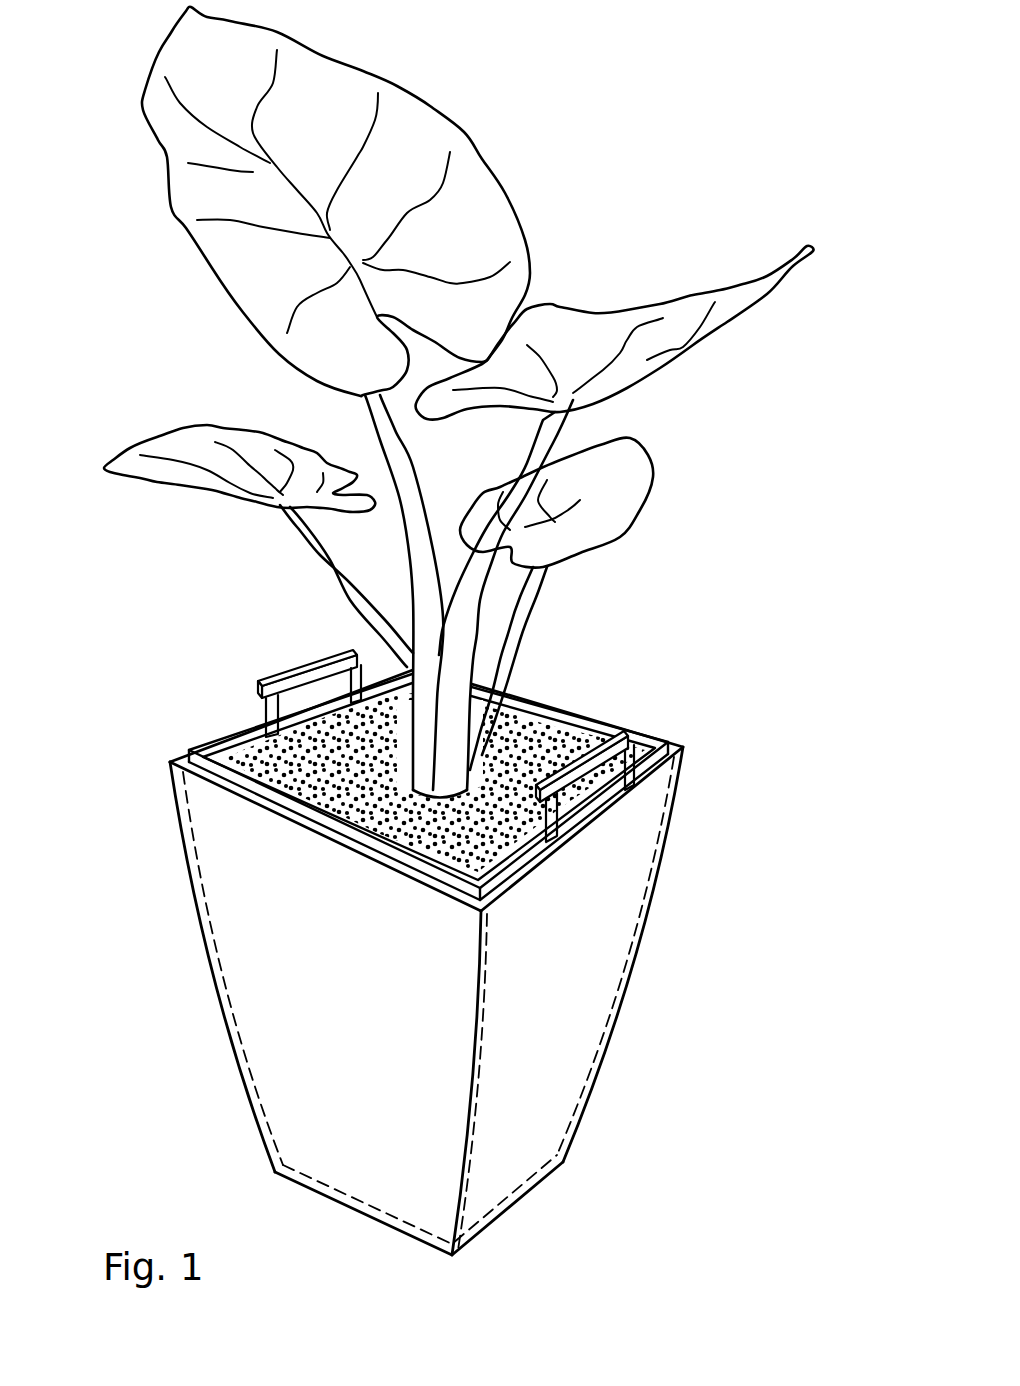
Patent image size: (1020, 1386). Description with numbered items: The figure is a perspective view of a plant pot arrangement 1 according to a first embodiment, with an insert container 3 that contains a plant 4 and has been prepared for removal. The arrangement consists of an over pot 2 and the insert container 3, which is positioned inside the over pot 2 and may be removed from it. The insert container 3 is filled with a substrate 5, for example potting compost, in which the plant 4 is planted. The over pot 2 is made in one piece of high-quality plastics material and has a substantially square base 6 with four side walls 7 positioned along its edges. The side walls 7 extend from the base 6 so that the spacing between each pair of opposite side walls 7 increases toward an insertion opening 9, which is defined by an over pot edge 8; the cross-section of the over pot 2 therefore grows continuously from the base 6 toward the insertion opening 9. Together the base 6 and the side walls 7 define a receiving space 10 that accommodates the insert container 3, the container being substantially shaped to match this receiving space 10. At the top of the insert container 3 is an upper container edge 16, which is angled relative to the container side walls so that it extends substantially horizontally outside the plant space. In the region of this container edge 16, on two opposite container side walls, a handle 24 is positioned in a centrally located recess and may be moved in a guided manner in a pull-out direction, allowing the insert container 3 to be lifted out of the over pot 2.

The plant pot arrangement 1 is at (459, 911).
The over pot 2 is at (450, 961).
The insert container 3 is at (502, 746).
The plant 4 is at (633, 487).
The substrate 5 is at (545, 730).
The base 6 is at (510, 1212).
The side walls 7 is at (607, 980).
The over pot edge 8 is at (683, 747).
The insertion opening 9 is at (195, 757).
The receiving space 10 is at (238, 1048).
The upper container edge 16 is at (650, 758).
The handle 24 is at (533, 713).